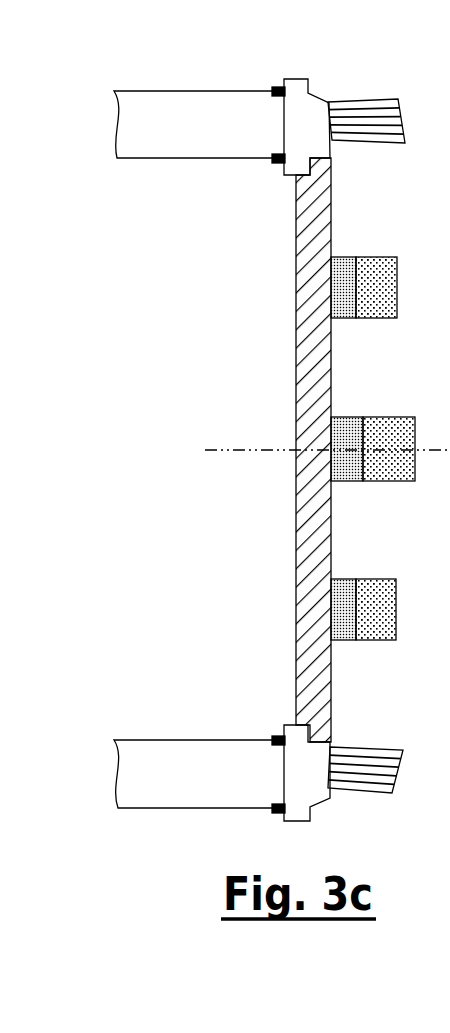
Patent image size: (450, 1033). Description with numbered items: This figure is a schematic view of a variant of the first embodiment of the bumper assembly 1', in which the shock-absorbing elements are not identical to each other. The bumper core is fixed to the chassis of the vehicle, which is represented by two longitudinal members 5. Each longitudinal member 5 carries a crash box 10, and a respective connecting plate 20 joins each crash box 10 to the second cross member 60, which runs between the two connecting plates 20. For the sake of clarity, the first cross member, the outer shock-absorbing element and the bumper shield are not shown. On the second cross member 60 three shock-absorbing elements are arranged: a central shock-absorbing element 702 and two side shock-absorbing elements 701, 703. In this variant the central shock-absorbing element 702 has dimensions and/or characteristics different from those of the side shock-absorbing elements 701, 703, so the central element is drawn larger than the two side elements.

The bumper assembly 1' is at (291, 431).
The longitudinal members 5 is at (156, 138).
The crash boxes 10 is at (366, 103).
The connecting plates 20 is at (290, 163).
The second cross member 60 is at (296, 545).
The side shock-absorbing element 701 is at (383, 232).
The central shock-absorbing element 702 is at (373, 402).
The side shock-absorbing element 703 is at (369, 566).